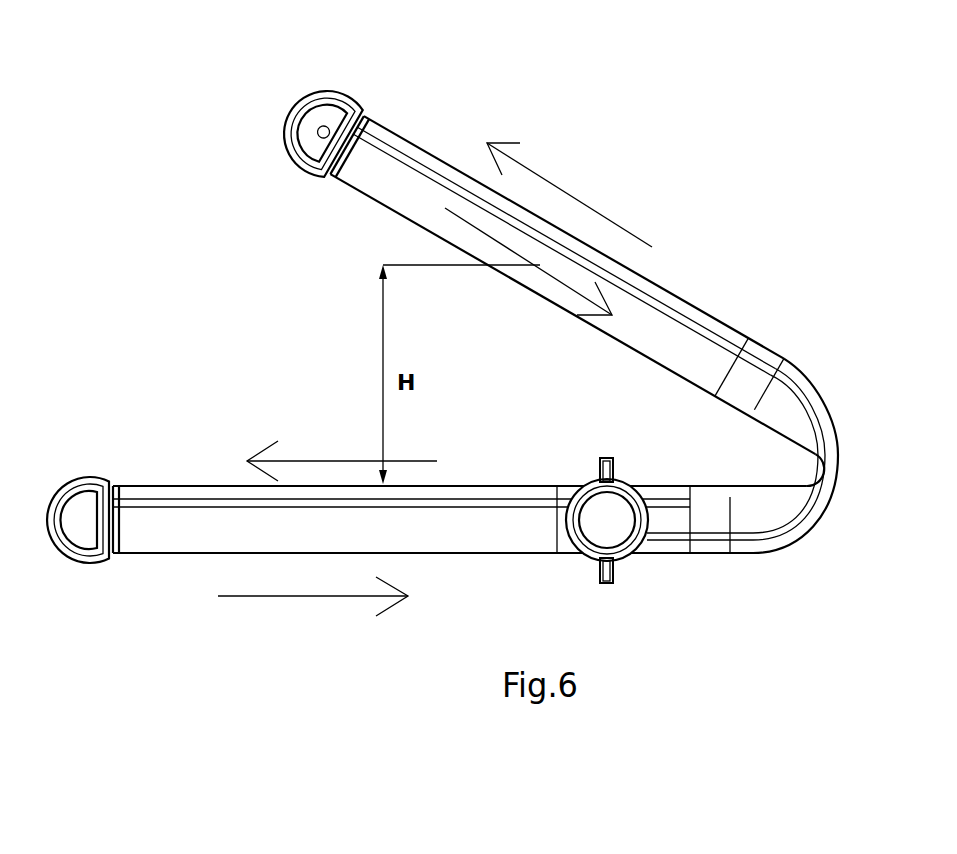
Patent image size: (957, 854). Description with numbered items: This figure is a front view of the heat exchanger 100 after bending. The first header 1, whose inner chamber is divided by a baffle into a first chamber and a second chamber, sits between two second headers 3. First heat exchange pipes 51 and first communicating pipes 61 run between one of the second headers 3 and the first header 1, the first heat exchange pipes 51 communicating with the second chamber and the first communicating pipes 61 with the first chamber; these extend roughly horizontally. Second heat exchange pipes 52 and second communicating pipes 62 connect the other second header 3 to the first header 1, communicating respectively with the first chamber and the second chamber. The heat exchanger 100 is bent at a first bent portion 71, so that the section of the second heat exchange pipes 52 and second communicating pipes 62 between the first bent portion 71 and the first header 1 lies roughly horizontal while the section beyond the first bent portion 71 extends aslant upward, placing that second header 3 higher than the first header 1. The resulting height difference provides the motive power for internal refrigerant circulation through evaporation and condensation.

The heat exchanger 100 is at (736, 141).
The first header 1 is at (612, 525).
The second header 3 is at (336, 122).
The first heat exchange pipes 51 is at (155, 537).
The second heat exchange pipes 52 is at (782, 408).
The first communicating pipes 61 is at (163, 493).
The second communicating pipes 62 is at (795, 373).
The first bent portion 71 is at (866, 475).